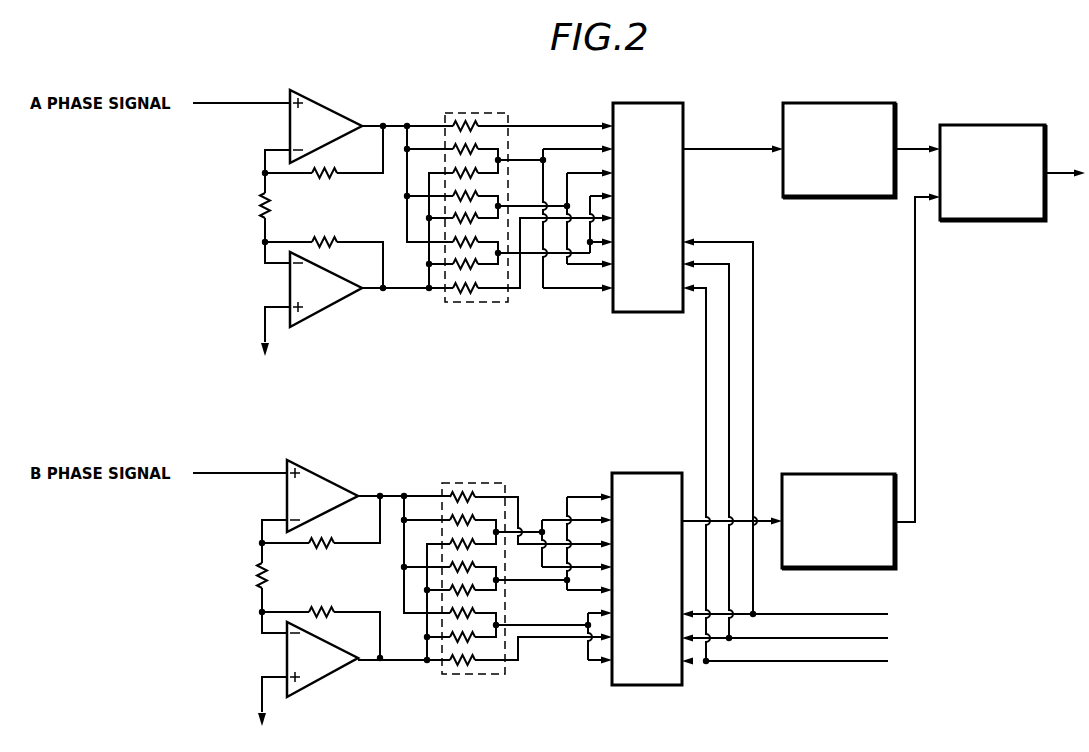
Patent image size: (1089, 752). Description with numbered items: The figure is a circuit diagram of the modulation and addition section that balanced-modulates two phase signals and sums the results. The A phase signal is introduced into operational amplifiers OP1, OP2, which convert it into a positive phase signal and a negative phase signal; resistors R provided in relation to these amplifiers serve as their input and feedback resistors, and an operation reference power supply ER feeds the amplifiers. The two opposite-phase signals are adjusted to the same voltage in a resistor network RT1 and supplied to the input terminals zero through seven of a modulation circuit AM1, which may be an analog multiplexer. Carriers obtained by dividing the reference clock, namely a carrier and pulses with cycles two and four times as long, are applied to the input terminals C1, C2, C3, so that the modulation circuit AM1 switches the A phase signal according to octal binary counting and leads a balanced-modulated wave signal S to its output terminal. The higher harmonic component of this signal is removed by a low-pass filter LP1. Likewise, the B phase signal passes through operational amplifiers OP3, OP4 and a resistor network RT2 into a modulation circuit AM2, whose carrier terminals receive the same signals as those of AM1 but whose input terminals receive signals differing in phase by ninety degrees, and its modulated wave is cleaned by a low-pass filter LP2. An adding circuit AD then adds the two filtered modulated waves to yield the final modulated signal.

The operational amplifier OP1 is at (340, 118).
The operational amplifier OP2 is at (337, 297).
The operational amplifier OP3 is at (337, 488).
The operational amplifier OP4 is at (334, 667).
The resistor network RT1 is at (477, 113).
The resistor network RT2 is at (472, 483).
The modulation circuit AM1 is at (647, 103).
The modulation circuit AM2 is at (642, 473).
The low-pass filter LP1 is at (836, 103).
The low-pass filter LP2 is at (832, 474).
The adding circuit AD is at (989, 125).
The resistor R is at (323, 180).
The operation reference power supply ER is at (277, 536).
The modulated wave signal S is at (1065, 166).
The input terminal C1 is at (770, 427).
The input terminal C2 is at (770, 450).
The input terminal C3 is at (770, 474).